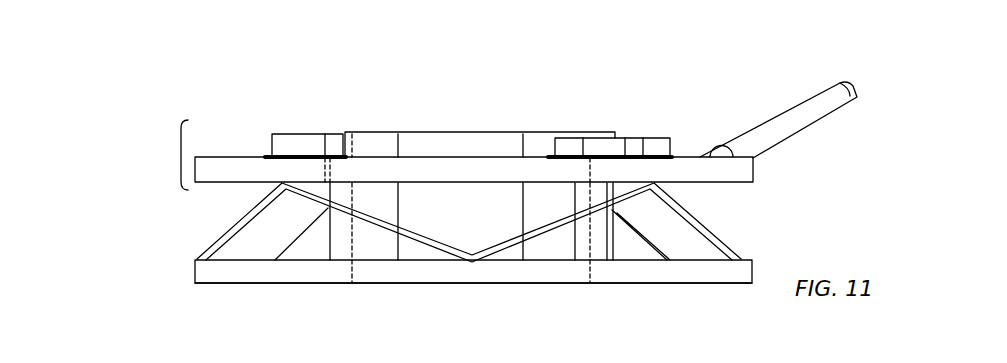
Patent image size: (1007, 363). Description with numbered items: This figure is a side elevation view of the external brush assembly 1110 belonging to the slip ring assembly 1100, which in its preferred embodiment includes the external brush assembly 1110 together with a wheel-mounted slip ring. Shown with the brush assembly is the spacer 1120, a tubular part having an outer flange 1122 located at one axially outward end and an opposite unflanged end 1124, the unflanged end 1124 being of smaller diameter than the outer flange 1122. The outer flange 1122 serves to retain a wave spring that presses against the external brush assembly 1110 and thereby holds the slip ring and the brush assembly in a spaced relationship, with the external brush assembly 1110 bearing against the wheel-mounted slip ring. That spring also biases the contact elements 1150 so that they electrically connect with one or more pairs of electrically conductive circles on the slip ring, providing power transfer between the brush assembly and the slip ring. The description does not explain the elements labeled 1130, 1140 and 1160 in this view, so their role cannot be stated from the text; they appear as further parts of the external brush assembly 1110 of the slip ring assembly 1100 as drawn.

The slip ring assembly 1100 is at (249, 109).
The external brush assembly 1110 is at (180, 150).
The spacer 1120 is at (290, 272).
The outer flange 1122 is at (636, 272).
The unflanged end 1124 is at (430, 132).
The scissor linkage 1130 is at (226, 222).
The handle lever 1140 is at (806, 125).
The contact elements 1150 is at (306, 134).
The roller 1160 is at (745, 173).